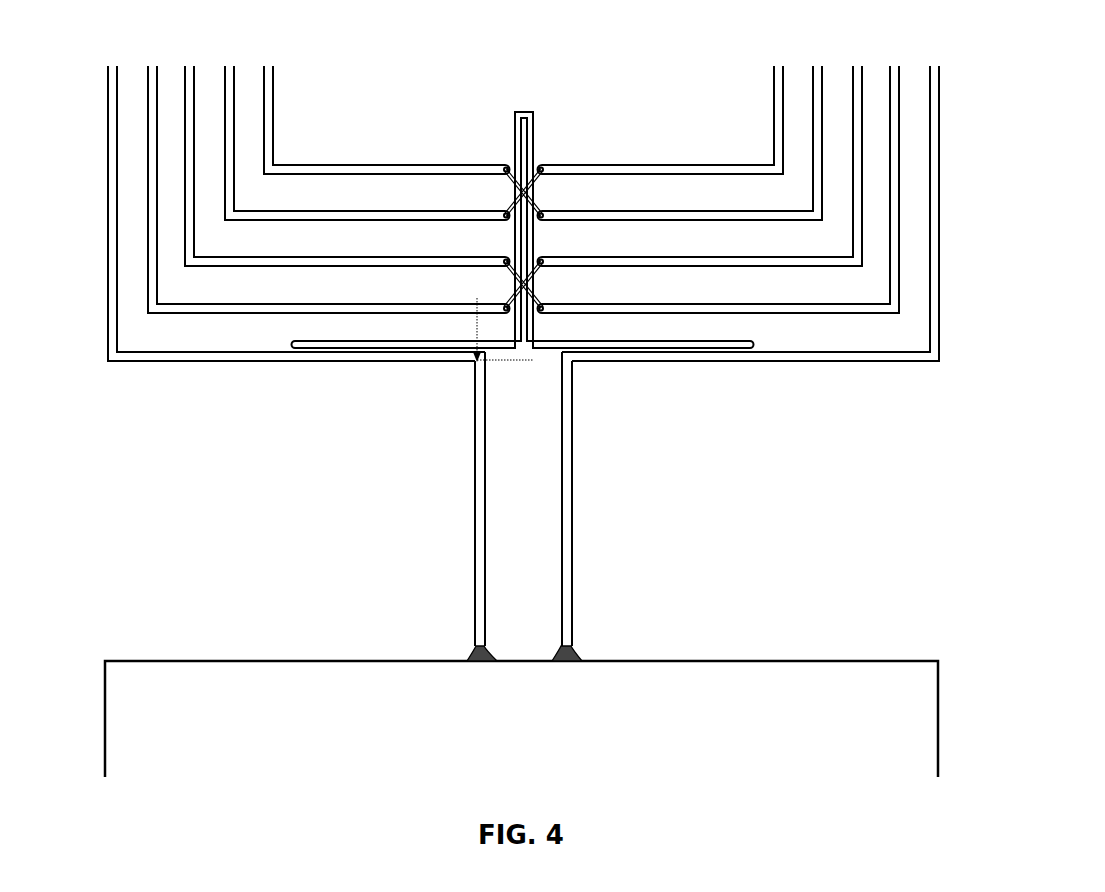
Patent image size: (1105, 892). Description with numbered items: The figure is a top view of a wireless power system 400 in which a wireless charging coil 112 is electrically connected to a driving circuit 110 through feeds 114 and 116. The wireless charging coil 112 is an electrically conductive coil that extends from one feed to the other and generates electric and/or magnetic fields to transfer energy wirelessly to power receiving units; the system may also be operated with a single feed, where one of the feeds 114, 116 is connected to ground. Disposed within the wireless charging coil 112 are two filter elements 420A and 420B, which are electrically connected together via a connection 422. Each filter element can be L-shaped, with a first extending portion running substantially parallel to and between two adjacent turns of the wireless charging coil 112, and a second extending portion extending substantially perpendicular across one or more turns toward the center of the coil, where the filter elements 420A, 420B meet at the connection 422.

The wireless power system 400 is at (993, 87).
The filter element 420A is at (500, 148).
The filter element 420B is at (546, 136).
The connection 422 is at (533, 100).
The wireless charging coil 112 is at (572, 489).
The feed 114 is at (480, 674).
The feed 116 is at (565, 674).
The driving circuit 110 is at (938, 743).